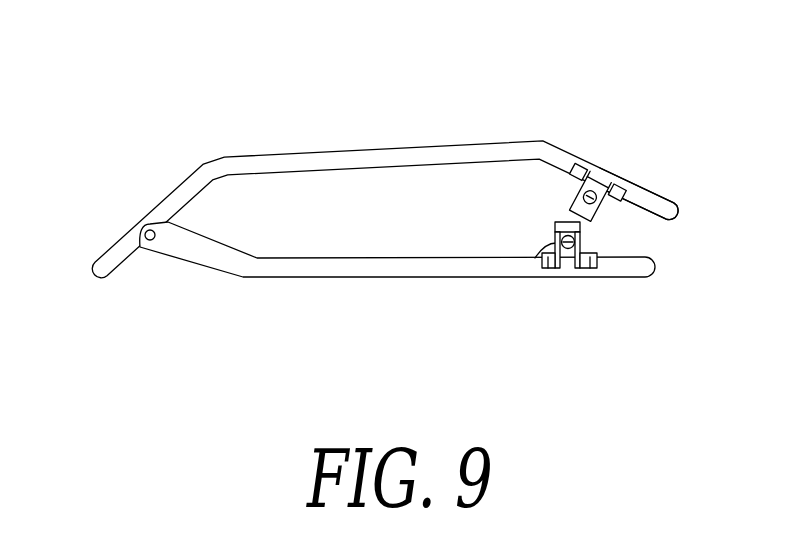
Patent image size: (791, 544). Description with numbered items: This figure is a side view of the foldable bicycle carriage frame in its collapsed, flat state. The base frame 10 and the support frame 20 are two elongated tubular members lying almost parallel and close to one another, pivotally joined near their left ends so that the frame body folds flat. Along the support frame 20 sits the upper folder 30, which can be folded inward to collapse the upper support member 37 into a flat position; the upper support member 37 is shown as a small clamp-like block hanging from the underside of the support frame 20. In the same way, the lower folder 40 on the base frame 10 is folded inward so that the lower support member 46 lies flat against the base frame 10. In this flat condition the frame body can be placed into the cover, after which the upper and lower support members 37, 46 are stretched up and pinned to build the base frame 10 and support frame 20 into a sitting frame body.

The base frame 10 is at (318, 267).
The support frame 20 is at (348, 155).
The upper folder 30 is at (613, 215).
The upper support member 37 is at (563, 196).
The lower folder 40 is at (581, 242).
The lower support member 46 is at (532, 258).